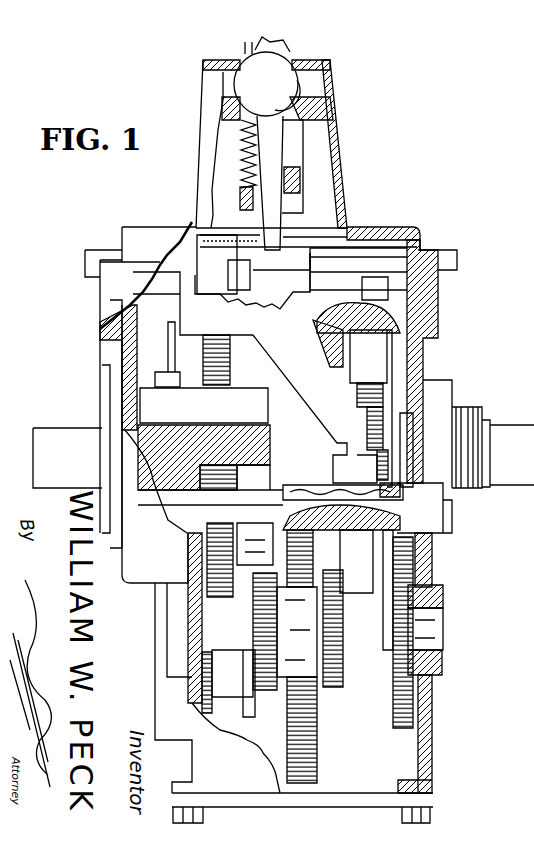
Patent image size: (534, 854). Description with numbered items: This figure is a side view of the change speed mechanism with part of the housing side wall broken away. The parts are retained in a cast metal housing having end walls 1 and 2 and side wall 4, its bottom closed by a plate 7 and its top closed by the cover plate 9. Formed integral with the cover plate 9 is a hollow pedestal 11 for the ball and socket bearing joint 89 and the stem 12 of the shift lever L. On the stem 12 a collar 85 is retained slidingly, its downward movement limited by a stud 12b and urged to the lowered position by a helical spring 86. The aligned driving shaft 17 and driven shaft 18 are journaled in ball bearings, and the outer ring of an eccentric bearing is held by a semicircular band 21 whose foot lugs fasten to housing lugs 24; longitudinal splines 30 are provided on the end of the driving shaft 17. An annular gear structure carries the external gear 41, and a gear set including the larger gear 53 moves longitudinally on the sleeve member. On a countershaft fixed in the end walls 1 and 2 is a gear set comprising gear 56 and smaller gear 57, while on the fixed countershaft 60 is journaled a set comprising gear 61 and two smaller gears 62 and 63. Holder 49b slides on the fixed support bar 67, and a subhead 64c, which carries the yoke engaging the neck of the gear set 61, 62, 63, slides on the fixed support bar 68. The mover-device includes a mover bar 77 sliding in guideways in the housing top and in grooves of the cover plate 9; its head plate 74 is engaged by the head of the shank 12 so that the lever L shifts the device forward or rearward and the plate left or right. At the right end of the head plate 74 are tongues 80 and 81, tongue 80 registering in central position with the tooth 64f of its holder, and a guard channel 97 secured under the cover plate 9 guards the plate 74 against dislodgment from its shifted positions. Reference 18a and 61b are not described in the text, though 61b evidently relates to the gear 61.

The shift lever L is at (282, 48).
The ball and socket bearing joint 89 is at (300, 75).
The collar 85 is at (300, 183).
The stud 12b is at (290, 190).
The stem 12 is at (277, 144).
The helical spring 86 is at (238, 138).
The hollow pedestal 11 is at (197, 168).
The cover plate 9 is at (150, 225).
The tongue 80 is at (213, 272).
The head plate 74 is at (234, 248).
The tooth 64f is at (183, 270).
The pin 18a is at (288, 247).
The guard channel 97 is at (345, 225).
The mover bar 77 is at (440, 250).
The holder 49b is at (373, 283).
The fixed support bar 67 is at (400, 302).
The tongue 81 is at (281, 273).
The end wall 1 is at (418, 358).
The gear 53 is at (382, 392).
The longitudinal splines 30 is at (397, 442).
The end wall 2 is at (102, 320).
The semicircular band 21 is at (150, 353).
The driven shaft 18 is at (50, 428).
The driving shaft 17 is at (512, 432).
The gear 61b is at (198, 308).
The housing lug 24 is at (162, 498).
The subhead 64c is at (372, 500).
The fixed support bar 68 is at (433, 507).
The fixed countershaft 60 is at (443, 640).
The external gear 41 is at (195, 593).
The gear 57 is at (207, 660).
The gear 62 is at (257, 675).
The gear 56 is at (288, 739).
The gear 63 is at (368, 698).
The gear 61 is at (402, 730).
The side wall 4 is at (400, 762).
The plate 7 is at (237, 803).